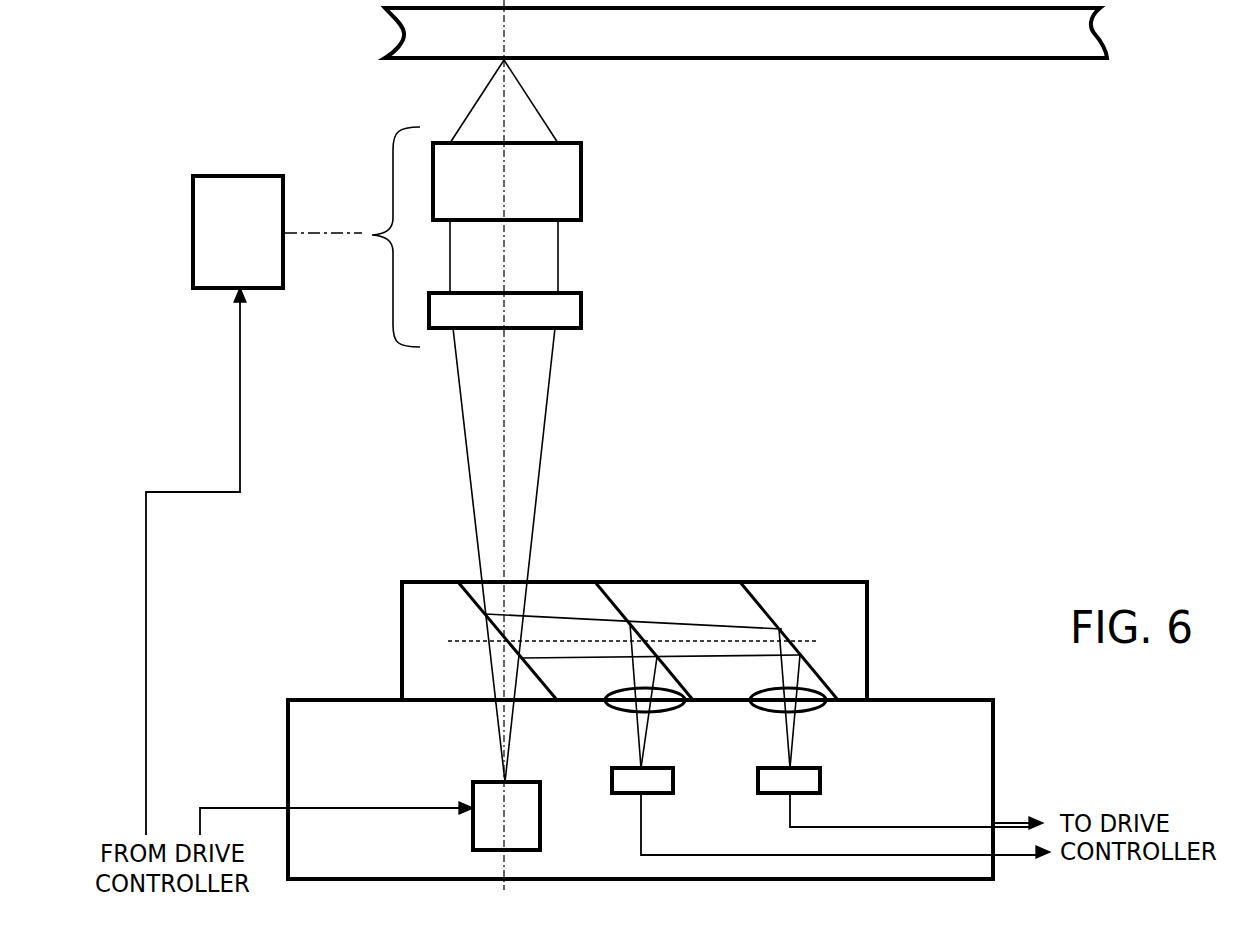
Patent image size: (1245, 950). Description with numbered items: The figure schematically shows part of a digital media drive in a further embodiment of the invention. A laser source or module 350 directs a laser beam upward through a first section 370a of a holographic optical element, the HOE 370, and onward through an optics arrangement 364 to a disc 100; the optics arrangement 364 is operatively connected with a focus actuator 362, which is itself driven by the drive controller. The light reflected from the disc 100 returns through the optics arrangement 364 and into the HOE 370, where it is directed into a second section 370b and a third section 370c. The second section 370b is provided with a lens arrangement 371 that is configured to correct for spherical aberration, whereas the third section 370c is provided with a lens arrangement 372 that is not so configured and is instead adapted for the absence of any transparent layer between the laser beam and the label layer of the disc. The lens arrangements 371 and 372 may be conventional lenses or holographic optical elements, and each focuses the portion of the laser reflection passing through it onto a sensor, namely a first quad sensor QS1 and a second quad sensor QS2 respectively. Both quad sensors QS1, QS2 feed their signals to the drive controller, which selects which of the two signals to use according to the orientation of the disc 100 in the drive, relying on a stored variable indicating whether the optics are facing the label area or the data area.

The disc 100 is at (833, 48).
The laser source or module 350 is at (481, 790).
The focus actuator 362 is at (218, 217).
The optics arrangement 364 is at (337, 142).
The HOE 370 is at (383, 592).
The first section 370a is at (415, 641).
The second section 370b is at (568, 595).
The third section 370c is at (725, 613).
The lens arrangement 371 is at (672, 690).
The lens arrangement 372 is at (810, 688).
The first quad sensor QS1 is at (655, 786).
The second quad sensor QS2 is at (808, 782).